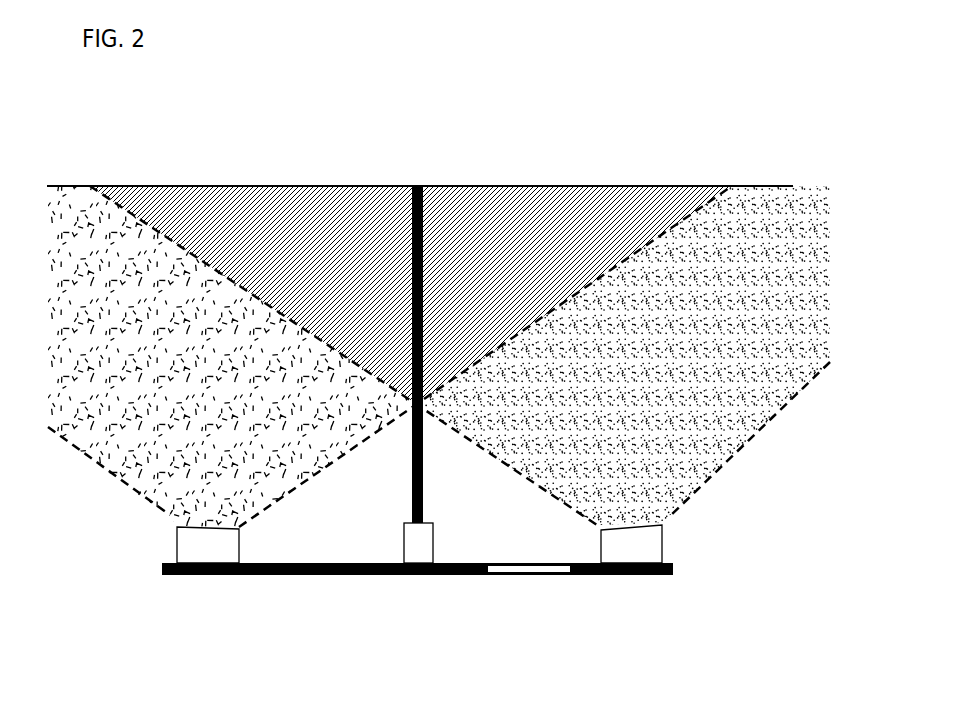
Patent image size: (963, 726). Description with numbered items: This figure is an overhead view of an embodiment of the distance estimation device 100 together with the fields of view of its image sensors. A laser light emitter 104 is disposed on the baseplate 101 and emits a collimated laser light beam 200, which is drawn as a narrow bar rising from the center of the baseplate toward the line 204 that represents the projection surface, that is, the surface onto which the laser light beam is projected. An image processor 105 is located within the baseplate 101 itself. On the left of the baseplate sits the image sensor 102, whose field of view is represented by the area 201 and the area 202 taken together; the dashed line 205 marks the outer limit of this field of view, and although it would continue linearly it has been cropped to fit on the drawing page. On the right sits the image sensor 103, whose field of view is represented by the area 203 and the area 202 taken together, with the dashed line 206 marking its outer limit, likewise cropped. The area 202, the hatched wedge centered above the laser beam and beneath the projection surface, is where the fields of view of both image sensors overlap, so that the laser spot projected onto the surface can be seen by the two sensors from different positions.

The distance estimation device 100 is at (420, 595).
The baseplate 101 is at (326, 575).
The image sensor 102 is at (177, 546).
The image sensor 103 is at (662, 546).
The laser light emitter 104 is at (433, 543).
The image processor 105 is at (528, 575).
The collimated laser light beam 200 is at (438, 354).
The area 201 is at (232, 356).
The area 202 is at (411, 356).
The area 203 is at (624, 355).
The line 204 is at (648, 186).
The dashed line 205 is at (109, 471).
The dashed line 206 is at (749, 440).